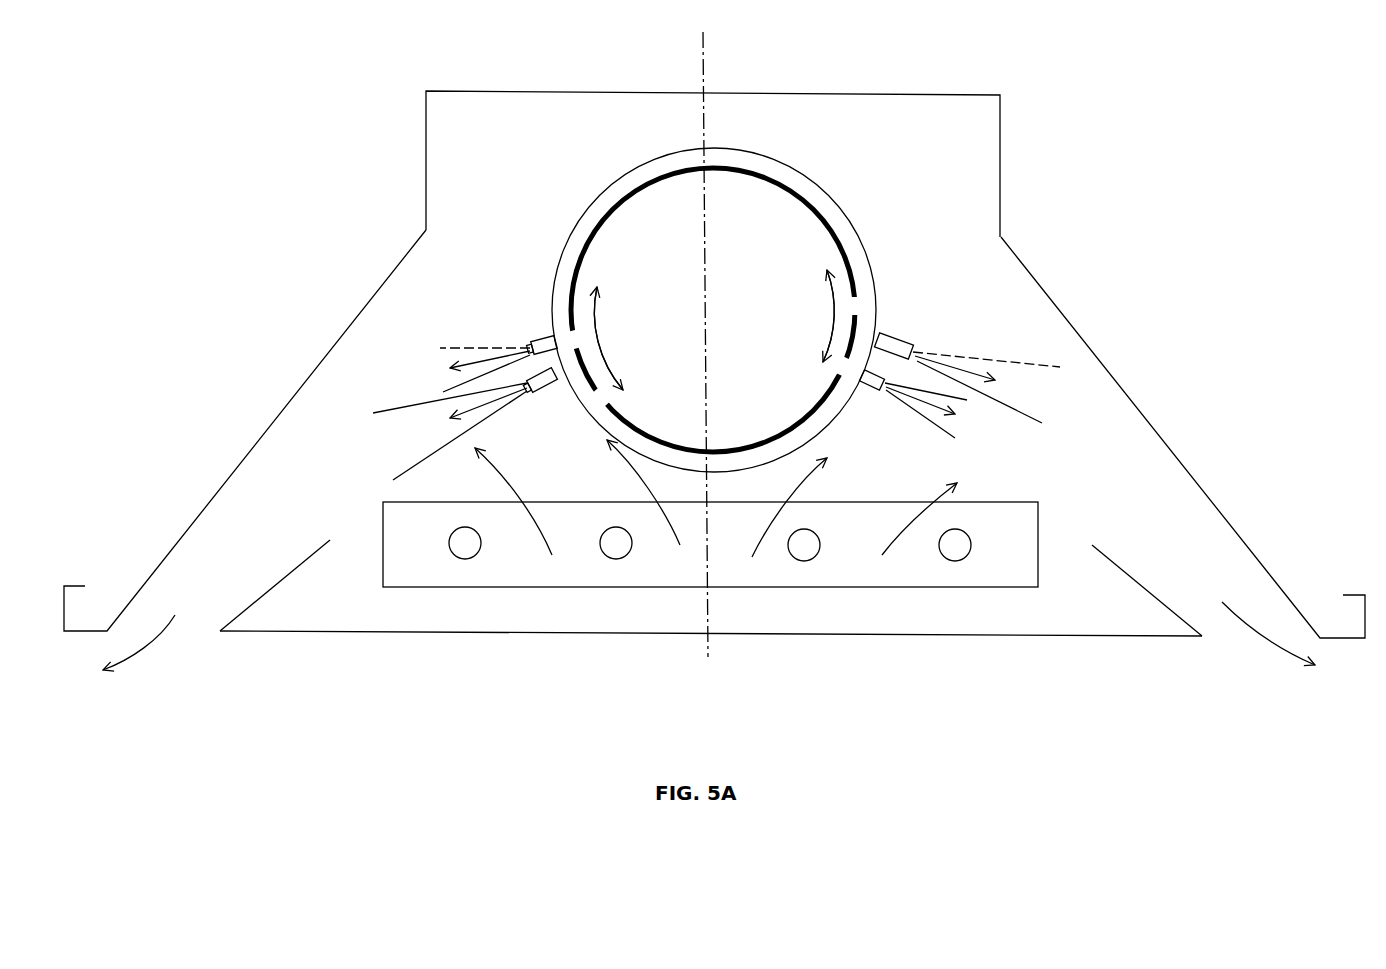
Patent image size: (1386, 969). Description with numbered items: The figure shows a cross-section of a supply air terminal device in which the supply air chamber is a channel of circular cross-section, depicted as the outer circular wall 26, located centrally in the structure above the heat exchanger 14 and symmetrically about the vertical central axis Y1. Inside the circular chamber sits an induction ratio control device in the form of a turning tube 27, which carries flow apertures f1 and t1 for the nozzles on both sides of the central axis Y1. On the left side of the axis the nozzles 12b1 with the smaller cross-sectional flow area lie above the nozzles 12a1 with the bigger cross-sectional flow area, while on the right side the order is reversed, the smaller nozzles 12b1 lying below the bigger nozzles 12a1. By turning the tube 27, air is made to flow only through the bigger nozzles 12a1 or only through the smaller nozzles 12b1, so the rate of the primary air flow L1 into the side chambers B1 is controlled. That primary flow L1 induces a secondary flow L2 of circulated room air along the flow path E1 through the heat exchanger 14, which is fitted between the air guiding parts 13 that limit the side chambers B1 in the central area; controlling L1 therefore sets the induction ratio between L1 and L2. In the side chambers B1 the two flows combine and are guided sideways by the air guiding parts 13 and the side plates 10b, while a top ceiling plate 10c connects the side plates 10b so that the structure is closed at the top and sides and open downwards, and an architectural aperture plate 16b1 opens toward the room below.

The side plate 10b is at (267, 423).
The top ceiling plate 10c is at (826, 93).
The nozzle 12a1 is at (552, 392).
The nozzle 12b1 is at (548, 338).
The air guiding part 13 is at (270, 590).
The heat exchanger 14 is at (510, 580).
The third aperture plate 16b1 is at (422, 633).
The outer ring 26 is at (838, 198).
The turning tube 27 is at (848, 248).
The vertical central axis Y1 is at (703, 68).
The primary air flow L1 is at (467, 362).
The secondary air flow L2 is at (758, 547).
The flow path E1 is at (466, 490).
The side chamber B1 is at (281, 536).
The flow aperture t1 is at (603, 397).
The flow aperture f1 is at (573, 338).